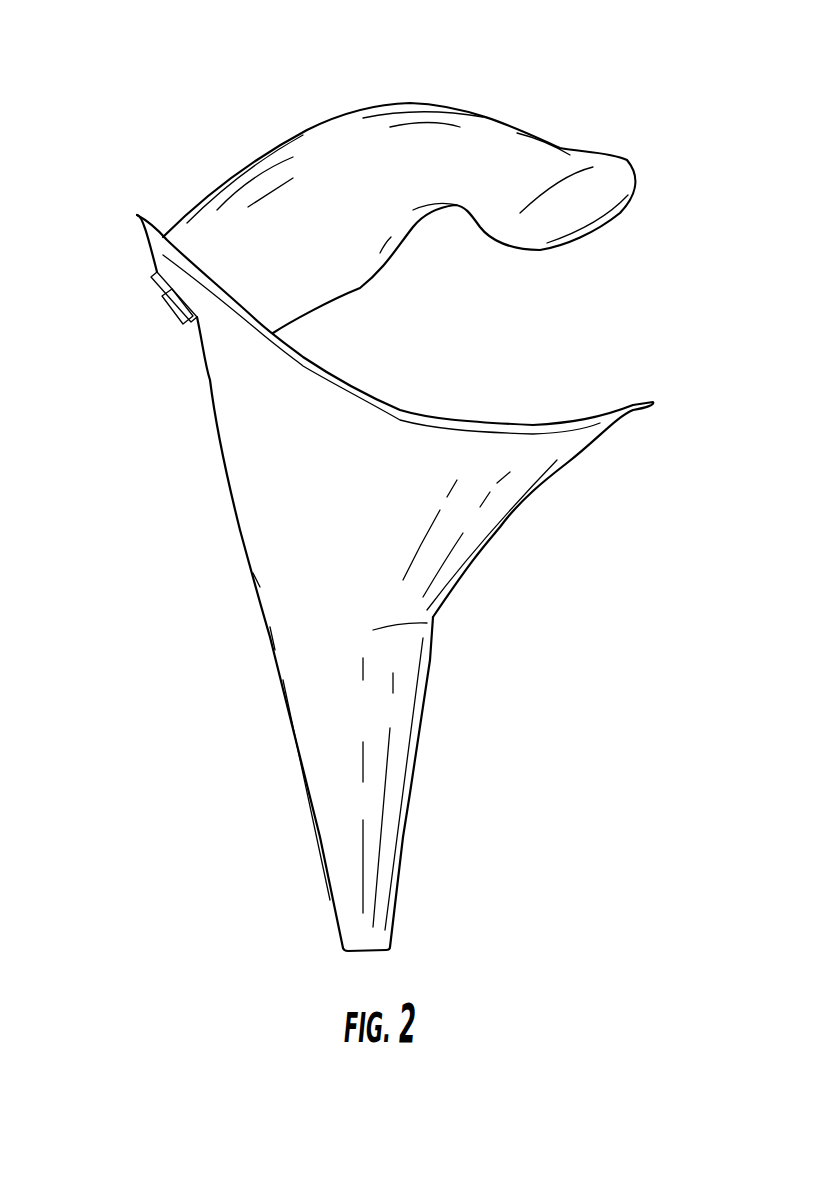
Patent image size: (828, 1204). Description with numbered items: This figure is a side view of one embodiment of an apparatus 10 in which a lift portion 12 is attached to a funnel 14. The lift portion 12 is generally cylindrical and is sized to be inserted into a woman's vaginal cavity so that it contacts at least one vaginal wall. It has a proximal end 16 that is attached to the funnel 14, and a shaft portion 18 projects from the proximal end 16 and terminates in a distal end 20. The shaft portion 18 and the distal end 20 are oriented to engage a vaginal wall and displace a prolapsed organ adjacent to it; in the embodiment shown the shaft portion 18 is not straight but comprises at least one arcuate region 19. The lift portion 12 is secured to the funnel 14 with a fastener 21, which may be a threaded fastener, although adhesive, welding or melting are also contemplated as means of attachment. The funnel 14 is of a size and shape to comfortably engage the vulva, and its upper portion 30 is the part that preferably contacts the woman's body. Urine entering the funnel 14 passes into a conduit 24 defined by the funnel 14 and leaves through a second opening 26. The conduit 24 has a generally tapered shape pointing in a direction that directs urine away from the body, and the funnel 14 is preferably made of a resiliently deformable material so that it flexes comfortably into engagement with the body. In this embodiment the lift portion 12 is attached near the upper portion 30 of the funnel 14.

The apparatus 10 is at (122, 42).
The lift portion 12 is at (382, 46).
The funnel 14 is at (222, 672).
The proximal end 16 is at (193, 242).
The shaft portion 18 is at (307, 152).
The arcuate region 19 is at (450, 210).
The distal end 20 is at (570, 213).
The fastener 21 is at (173, 310).
The conduit 24 is at (385, 740).
The second opening 26 is at (380, 948).
The upper portion 30 is at (680, 443).